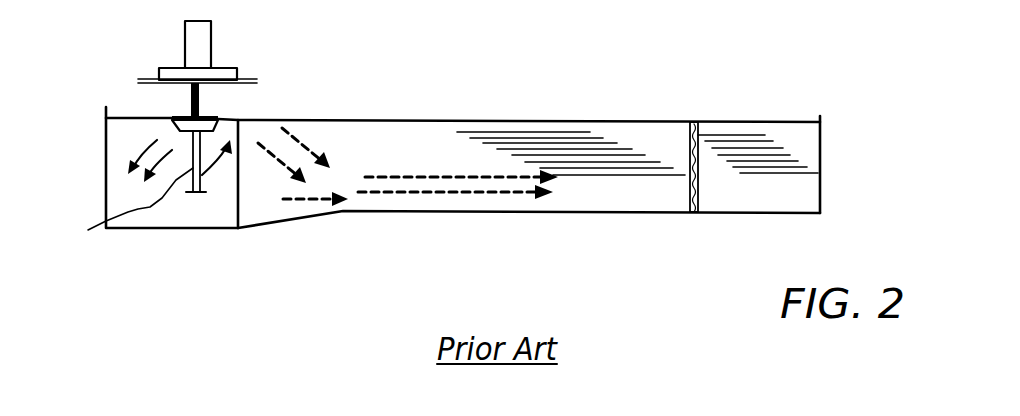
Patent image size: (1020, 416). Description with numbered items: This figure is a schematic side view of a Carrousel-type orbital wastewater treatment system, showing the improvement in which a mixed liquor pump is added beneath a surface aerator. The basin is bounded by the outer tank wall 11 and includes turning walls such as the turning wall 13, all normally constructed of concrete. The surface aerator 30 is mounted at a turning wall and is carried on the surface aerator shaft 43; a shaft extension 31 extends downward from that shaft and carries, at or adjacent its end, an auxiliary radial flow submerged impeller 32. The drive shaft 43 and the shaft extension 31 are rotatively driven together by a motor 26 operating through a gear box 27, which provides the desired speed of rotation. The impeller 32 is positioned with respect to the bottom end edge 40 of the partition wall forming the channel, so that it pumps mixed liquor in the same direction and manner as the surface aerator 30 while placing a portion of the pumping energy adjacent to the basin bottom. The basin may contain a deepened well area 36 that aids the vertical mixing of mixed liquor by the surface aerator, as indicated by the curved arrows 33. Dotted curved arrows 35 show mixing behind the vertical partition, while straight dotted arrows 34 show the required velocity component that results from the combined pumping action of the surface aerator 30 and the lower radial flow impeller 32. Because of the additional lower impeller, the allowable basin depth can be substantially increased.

The outer tank wall 11 is at (823, 200).
The turning wall 13 is at (692, 121).
The motor 26 is at (185, 42).
The gear box 27 is at (160, 76).
The surface aerator shaft 43 is at (190, 98).
The surface aerator 30 is at (238, 120).
The auxiliary radial flow submerged impeller 32 is at (193, 193).
The curved arrows 33 is at (143, 150).
The shaft extension 31 is at (127, 209).
The bottom end edge of the partition wall 40 is at (237, 203).
The deepened well area 36 is at (287, 225).
The mist flow 35 is at (300, 200).
The straight dotted arrows 34 is at (445, 177).